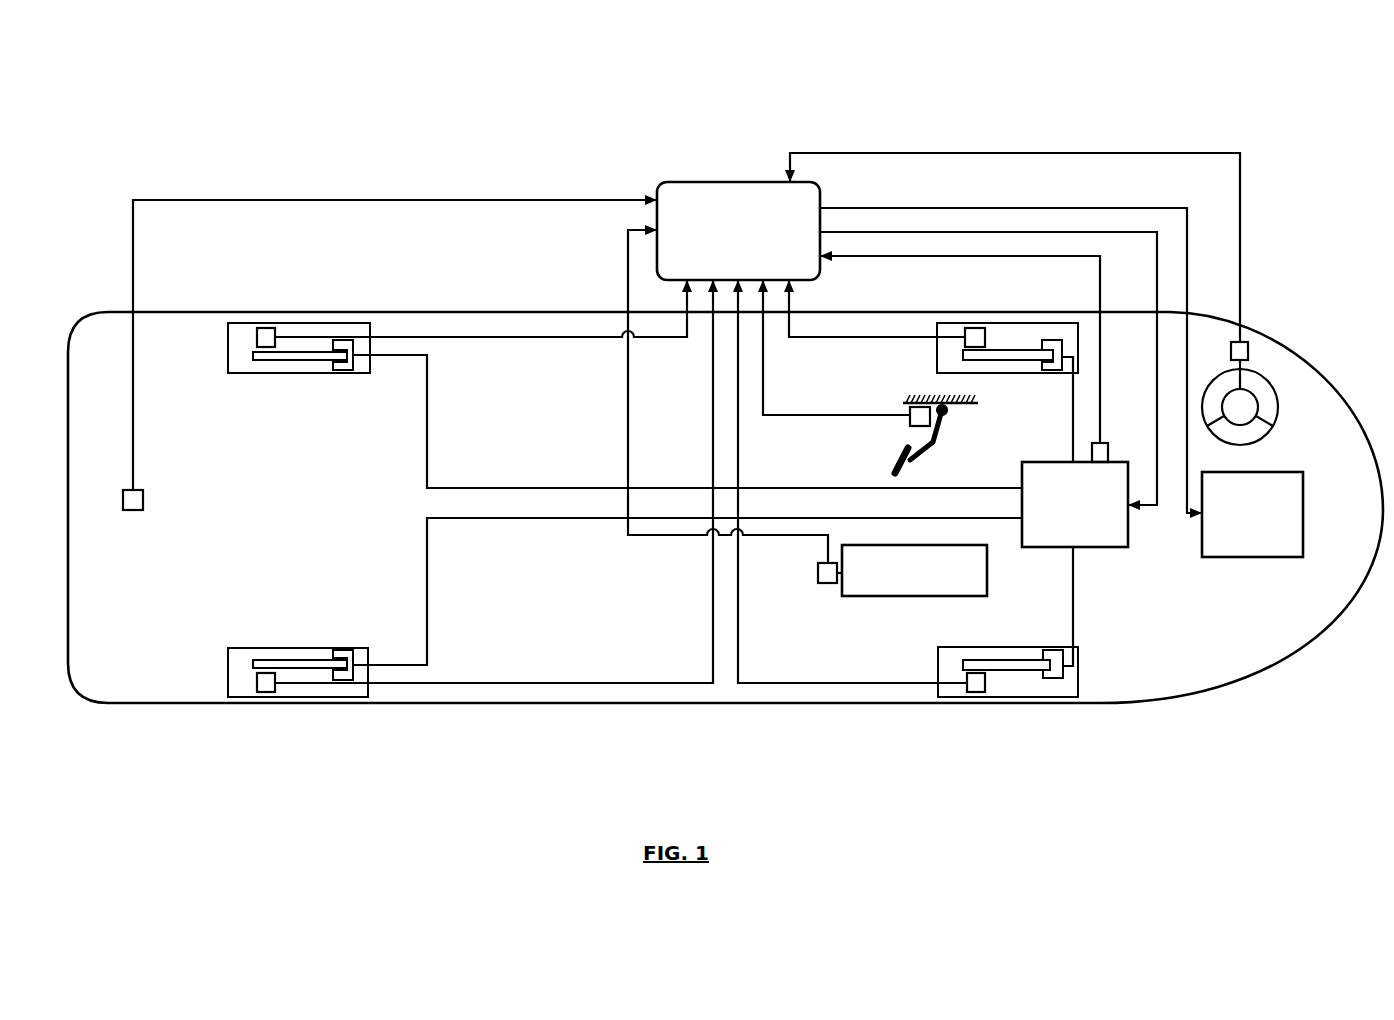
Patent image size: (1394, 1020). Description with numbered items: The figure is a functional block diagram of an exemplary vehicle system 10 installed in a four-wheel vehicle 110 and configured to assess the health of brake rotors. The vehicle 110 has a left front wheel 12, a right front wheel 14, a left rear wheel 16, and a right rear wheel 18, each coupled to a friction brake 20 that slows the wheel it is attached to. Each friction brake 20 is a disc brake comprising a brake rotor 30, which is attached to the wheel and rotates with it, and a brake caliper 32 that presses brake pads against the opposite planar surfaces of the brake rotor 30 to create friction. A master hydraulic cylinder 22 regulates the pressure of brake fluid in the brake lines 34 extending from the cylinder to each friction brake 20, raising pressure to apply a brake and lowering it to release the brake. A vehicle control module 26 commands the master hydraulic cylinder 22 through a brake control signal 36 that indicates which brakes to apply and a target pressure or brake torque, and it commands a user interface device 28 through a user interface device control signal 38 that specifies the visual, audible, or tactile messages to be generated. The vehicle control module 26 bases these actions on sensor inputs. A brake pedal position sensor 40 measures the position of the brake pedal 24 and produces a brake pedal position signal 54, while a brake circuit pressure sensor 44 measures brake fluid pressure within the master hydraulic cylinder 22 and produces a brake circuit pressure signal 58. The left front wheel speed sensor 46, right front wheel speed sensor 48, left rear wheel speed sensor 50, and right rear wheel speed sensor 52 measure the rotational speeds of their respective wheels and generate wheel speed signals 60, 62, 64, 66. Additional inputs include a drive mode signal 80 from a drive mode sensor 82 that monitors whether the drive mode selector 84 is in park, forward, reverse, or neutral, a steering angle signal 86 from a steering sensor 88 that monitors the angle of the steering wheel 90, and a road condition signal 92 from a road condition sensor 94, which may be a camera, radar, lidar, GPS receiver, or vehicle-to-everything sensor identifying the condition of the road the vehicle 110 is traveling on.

The vehicle system 10 is at (222, 83).
The vehicle 110 is at (68, 337).
The left front wheel 12 is at (937, 348).
The right front wheel 14 is at (938, 672).
The left rear wheel 16 is at (228, 347).
The right rear wheel 18 is at (228, 672).
The friction brake 20 is at (326, 364).
The master hydraulic cylinder 22 is at (1020, 470).
The brake pedal 24 is at (932, 436).
The vehicle control module 26 is at (705, 180).
The user interface device 28 is at (1252, 558).
The brake rotor 30 is at (253, 355).
The brake caliper 32 is at (353, 358).
The brake line 34 is at (583, 487).
The brake control signal 36 is at (975, 232).
The user interface device control signal 38 is at (945, 208).
The brake pedal position sensor 40 is at (907, 430).
The brake circuit pressure sensor 44 is at (1108, 445).
The left front wheel speed sensor 46 is at (973, 328).
The right front wheel speed sensor 48 is at (973, 695).
The left rear wheel speed sensor 50 is at (264, 327).
The right rear wheel speed sensor 52 is at (265, 693).
The brake pedal position signal 54 is at (872, 418).
The brake circuit pressure signal 58 is at (1097, 280).
The wheel speed signal 60 is at (840, 340).
The wheel speed signal 62 is at (740, 462).
The wheel speed signal 64 is at (480, 335).
The wheel speed signal 66 is at (710, 462).
The drive mode signal 80 is at (650, 537).
The drive mode sensor 82 is at (818, 583).
The drive mode selector 84 is at (990, 573).
The steering angle signal 86 is at (1242, 273).
The steering sensor 88 is at (1248, 343).
The steering wheel 90 is at (1273, 393).
The road condition signal 92 is at (133, 425).
The road condition sensor 94 is at (143, 510).